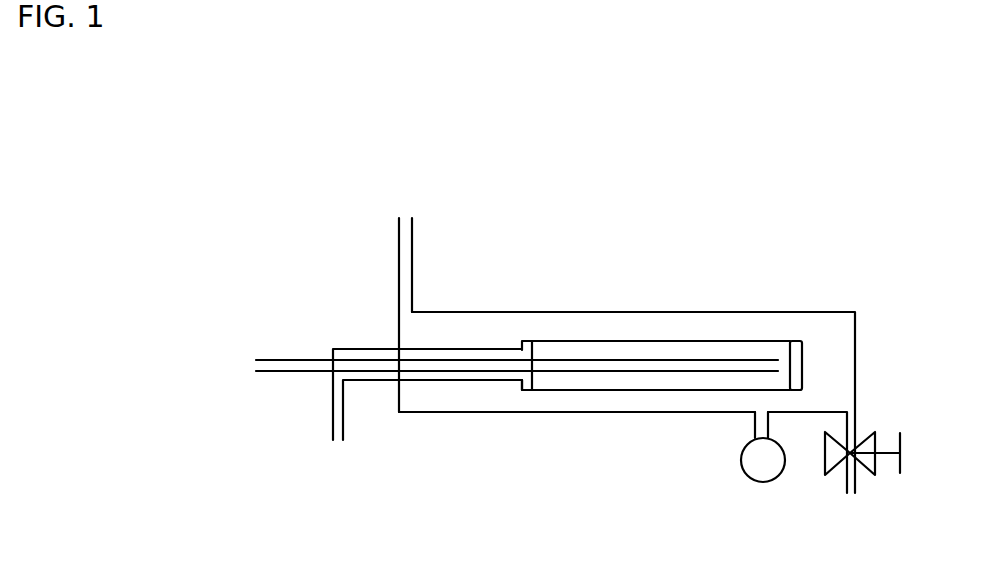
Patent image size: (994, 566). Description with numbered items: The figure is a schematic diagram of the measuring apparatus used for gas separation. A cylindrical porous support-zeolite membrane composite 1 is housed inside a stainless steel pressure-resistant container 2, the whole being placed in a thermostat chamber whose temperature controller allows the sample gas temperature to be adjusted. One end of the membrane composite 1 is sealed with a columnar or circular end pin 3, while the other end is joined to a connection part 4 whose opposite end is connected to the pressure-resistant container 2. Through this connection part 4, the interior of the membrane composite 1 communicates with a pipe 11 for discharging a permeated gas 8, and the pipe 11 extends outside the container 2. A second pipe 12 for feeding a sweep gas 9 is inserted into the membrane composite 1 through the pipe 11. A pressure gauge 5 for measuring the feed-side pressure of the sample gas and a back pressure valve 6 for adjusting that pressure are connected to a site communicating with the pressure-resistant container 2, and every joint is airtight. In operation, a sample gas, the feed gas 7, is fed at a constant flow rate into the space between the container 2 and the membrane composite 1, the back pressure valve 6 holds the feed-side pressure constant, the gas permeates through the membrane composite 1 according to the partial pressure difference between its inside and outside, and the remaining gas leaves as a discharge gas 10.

The cylindrical porous support-zeolite membrane composite 1 is at (662, 340).
The pressure-resistant container 2 is at (540, 312).
The end pin 3 is at (803, 362).
The connection part 4 is at (522, 390).
The pressure gauge 5 is at (741, 475).
The back pressure valve 6 is at (867, 430).
The feed gas 7 is at (405, 208).
The permeated gas 8 is at (337, 448).
The sweep gas 9 is at (245, 366).
The discharge gas 10 is at (850, 498).
The pipe 11 is at (350, 348).
The pipe 12 is at (298, 373).